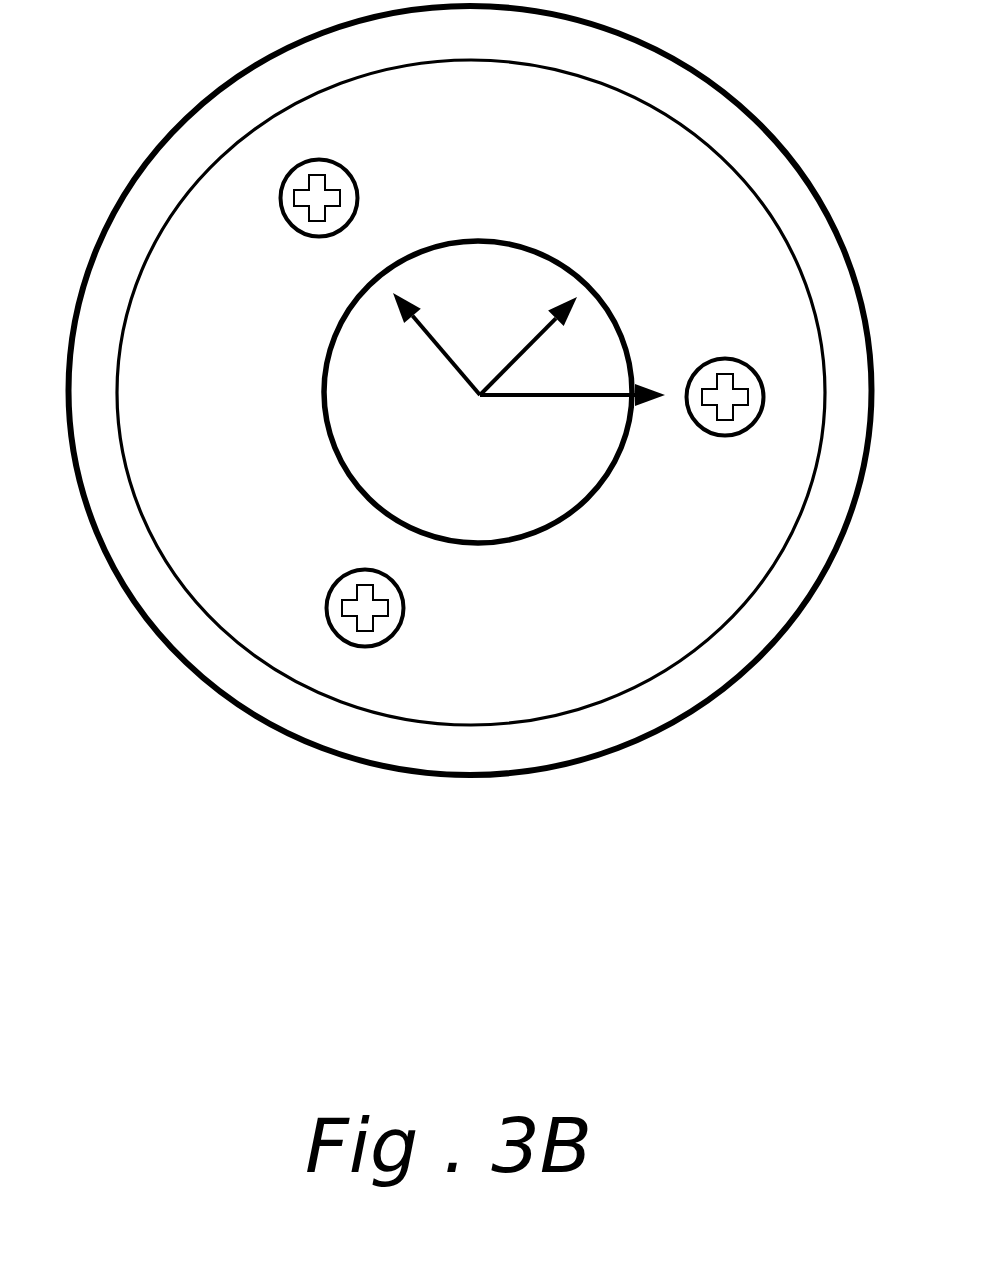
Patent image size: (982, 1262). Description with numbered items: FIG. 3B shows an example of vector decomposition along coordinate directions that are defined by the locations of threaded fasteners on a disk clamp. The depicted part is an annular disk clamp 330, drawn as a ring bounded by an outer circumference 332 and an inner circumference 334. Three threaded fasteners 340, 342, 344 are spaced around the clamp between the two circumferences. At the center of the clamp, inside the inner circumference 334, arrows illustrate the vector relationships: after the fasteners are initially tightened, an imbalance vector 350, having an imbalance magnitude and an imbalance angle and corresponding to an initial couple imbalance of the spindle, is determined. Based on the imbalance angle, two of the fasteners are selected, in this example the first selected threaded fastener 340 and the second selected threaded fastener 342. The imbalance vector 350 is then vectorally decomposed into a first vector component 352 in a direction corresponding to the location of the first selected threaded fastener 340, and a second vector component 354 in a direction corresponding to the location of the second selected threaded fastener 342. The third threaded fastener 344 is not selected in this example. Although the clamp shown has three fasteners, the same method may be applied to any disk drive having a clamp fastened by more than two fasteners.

The annular disk clamp 330 is at (195, 547).
The outer circumference 332 is at (257, 710).
The inner circumference 334 is at (327, 425).
The threaded fastener 340 is at (300, 212).
The threaded fastener 342 is at (748, 378).
The threaded fastener 344 is at (395, 610).
The imbalance vector 350 is at (580, 299).
The first vector component 352 is at (400, 318).
The second vector component 354 is at (648, 406).